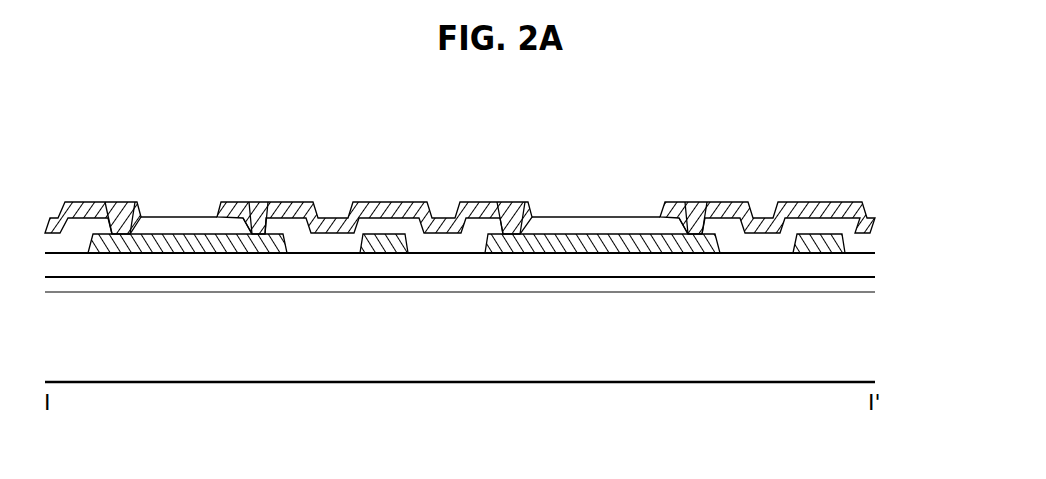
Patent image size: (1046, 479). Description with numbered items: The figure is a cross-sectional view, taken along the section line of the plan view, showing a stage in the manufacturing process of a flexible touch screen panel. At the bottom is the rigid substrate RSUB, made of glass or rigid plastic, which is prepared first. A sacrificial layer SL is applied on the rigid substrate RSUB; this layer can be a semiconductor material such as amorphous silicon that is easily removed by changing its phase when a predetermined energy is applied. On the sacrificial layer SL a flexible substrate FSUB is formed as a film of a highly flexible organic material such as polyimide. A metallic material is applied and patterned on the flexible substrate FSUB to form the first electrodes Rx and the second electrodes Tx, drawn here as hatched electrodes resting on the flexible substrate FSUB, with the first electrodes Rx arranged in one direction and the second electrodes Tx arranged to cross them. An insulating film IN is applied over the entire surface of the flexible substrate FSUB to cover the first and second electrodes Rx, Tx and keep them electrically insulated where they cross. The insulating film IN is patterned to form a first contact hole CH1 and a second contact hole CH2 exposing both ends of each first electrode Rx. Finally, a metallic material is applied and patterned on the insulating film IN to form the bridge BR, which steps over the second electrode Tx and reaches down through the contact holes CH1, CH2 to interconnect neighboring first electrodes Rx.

The bridge BR is at (357, 202).
The insulating film IN is at (180, 223).
The first contact hole CH1 is at (117, 214).
The second contact hole CH2 is at (259, 214).
The first electrode Rx is at (187, 240).
The second electrode Tx is at (386, 240).
The flexible substrate FSUB is at (868, 265).
The sacrificial layer SL is at (868, 284).
The rigid substrate RSUB is at (868, 340).